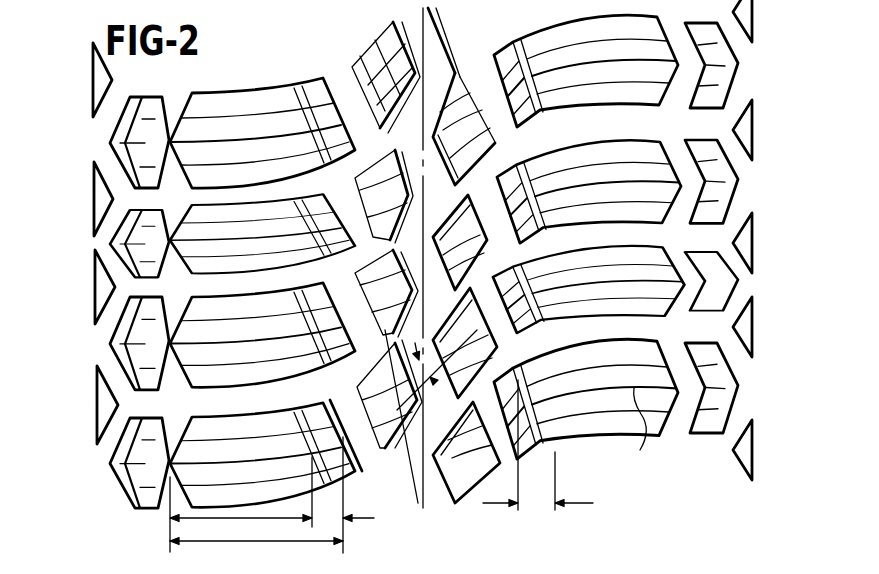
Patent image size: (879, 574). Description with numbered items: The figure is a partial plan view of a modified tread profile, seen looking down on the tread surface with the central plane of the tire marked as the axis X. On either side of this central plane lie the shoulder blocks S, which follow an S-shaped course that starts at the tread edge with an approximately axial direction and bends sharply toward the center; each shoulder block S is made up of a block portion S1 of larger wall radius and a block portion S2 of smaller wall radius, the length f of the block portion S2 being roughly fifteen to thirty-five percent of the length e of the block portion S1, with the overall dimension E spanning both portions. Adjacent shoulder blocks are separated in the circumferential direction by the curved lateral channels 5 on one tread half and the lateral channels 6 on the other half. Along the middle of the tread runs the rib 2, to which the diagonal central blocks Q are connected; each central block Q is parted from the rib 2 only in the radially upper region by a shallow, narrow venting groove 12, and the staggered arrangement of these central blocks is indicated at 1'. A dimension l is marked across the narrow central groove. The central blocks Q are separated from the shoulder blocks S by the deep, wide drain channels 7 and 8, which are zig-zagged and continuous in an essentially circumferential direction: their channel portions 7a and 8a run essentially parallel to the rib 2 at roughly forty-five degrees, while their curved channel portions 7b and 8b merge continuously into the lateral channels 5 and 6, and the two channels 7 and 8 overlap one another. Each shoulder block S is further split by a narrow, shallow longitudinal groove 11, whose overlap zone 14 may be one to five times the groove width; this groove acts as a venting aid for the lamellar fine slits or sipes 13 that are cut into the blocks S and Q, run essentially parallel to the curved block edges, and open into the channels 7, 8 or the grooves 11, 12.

The shoulder block S is at (262, 112).
The block portion S1 is at (262, 455).
The block portion S2 is at (354, 466).
The staggered arrangement of diagonal central blocks 1' is at (353, 77).
The venting groove 12 is at (390, 26).
The rib 2 is at (435, 38).
The central block Q is at (468, 93).
The lateral channel 5 is at (388, 396).
The lateral channel 6 is at (599, 136).
The drain channel 7 is at (367, 320).
The channel portion 7a is at (310, 149).
The curved channel portion 7b is at (293, 215).
The drain channel 8 is at (508, 241).
The channel portion 8a is at (492, 304).
The curved channel portion 8b is at (580, 427).
The longitudinal groove 11 is at (298, 418).
The lamellar fine slits (sipes) 13 is at (644, 431).
The overlap zone 14 is at (531, 364).
The length of block portion S1 e is at (241, 504).
The length of block portion S2 f is at (348, 495).
The total block length E is at (256, 543).
The width of central groove l is at (431, 416).
The central plane of the tire X is at (423, 272).